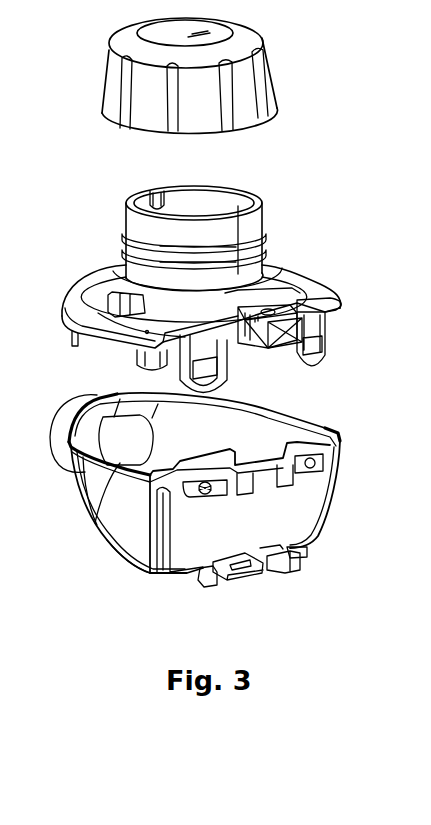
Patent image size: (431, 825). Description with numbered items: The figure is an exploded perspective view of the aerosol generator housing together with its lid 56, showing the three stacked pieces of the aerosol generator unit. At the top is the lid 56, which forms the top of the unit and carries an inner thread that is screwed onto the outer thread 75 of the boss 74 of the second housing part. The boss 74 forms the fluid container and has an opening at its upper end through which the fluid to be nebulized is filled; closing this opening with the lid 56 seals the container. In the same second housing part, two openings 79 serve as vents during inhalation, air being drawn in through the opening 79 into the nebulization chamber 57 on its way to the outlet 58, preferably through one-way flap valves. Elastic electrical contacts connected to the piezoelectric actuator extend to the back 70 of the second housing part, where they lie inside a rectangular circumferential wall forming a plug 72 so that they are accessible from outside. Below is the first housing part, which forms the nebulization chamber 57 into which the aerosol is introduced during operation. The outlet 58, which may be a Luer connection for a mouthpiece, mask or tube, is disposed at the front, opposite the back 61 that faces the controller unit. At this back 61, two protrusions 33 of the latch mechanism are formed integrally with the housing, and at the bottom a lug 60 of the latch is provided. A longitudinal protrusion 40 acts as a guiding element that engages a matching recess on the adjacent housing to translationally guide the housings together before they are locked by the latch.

The lid 56 is at (245, 44).
The boss 74 is at (262, 211).
The outer thread 75 is at (270, 242).
The back of the second housing part 70 is at (310, 281).
The openings 79 is at (115, 316).
The plug 72 is at (260, 350).
The lug 60 is at (320, 324).
The back of the first housing part 61 is at (286, 522).
The outlet 58 is at (62, 418).
The nebulization chamber 57 is at (86, 516).
The protrusions 33 is at (200, 497).
The longitudinal protrusion 40 is at (292, 574).